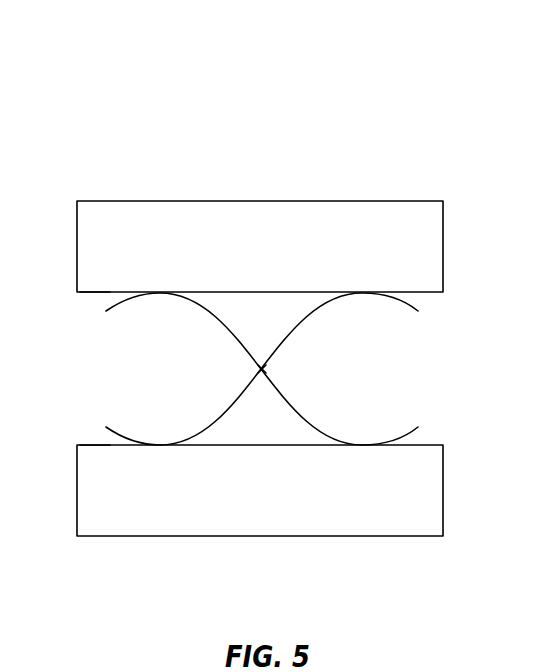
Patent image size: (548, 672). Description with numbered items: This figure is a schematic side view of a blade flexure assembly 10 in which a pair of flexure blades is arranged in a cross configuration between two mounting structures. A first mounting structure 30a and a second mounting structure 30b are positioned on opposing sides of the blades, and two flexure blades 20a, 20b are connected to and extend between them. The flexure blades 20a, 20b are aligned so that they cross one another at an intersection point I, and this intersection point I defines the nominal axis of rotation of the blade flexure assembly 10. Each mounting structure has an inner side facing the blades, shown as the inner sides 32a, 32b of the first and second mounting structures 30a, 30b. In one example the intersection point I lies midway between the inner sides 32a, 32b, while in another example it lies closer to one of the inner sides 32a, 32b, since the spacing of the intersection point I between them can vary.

The blade flexure assembly 10 is at (85, 108).
The flexure blade 20a is at (318, 314).
The flexure blade 20b is at (312, 413).
The first mounting structure 30a is at (414, 240).
The second mounting structure 30b is at (422, 492).
The inner side 32a is at (95, 292).
The inner side 32b is at (97, 445).
The intersection point I is at (256, 370).